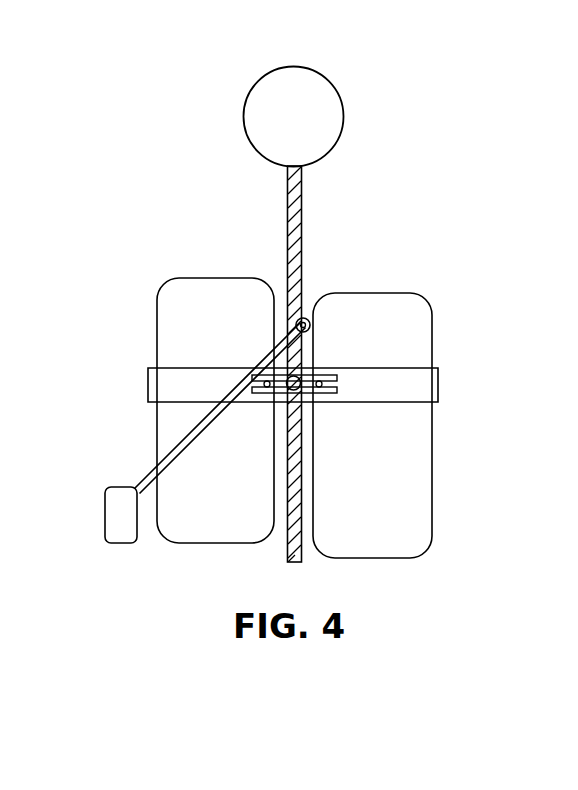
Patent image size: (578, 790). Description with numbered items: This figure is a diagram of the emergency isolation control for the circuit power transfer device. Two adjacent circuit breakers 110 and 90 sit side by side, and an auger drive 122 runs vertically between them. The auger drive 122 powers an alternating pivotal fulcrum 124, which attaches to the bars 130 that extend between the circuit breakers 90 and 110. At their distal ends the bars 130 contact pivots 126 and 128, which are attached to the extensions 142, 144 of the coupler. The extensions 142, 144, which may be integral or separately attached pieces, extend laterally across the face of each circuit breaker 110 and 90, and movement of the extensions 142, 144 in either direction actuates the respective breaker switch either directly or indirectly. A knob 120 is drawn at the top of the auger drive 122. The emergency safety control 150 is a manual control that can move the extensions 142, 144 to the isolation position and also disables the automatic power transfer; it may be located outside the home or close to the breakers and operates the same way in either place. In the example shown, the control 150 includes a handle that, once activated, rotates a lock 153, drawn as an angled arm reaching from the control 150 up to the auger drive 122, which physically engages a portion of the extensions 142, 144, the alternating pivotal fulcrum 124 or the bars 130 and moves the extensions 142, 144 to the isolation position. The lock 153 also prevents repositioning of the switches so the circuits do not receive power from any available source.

The knob 120 is at (316, 78).
The auger drive 122 is at (300, 225).
The circuit breaker 110 is at (230, 502).
The circuit breaker 90 is at (380, 502).
The extension 142 is at (167, 385).
The extension 144 is at (420, 386).
The alternating pivotal fulcrum 124 is at (285, 398).
The pivot 126 is at (268, 381).
The pivot 128 is at (319, 381).
The bars 130 is at (300, 390).
The lock 153 is at (148, 473).
The emergency safety control 150 is at (123, 546).